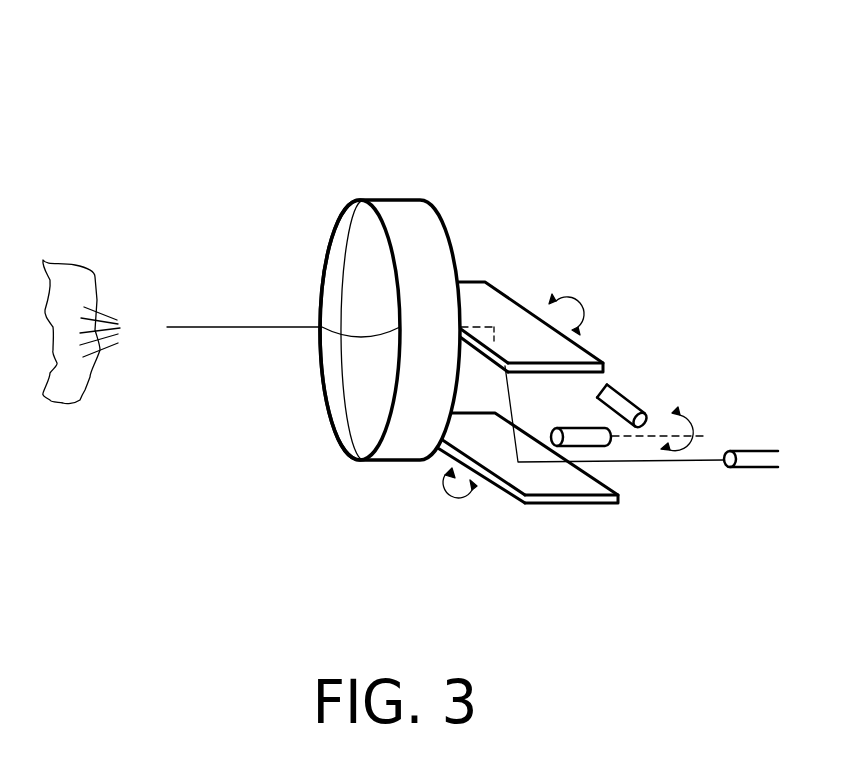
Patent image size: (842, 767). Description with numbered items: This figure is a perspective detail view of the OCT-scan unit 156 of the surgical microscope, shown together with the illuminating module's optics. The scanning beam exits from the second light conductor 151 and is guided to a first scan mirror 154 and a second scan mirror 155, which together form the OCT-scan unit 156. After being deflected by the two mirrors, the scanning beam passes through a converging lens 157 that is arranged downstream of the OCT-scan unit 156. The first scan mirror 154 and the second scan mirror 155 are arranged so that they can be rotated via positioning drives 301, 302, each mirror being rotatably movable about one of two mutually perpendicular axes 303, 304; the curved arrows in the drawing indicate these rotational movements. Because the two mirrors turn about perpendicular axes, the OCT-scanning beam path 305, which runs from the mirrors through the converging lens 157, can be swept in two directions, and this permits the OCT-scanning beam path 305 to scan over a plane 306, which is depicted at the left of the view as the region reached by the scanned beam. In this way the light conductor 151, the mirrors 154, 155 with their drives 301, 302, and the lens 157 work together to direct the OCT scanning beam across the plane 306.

The second light conductor 151 is at (767, 467).
The first scan mirror 154 is at (512, 480).
The second scan mirror 155 is at (490, 303).
The OCT-scan unit 156 is at (627, 290).
The converging lens 157 is at (403, 215).
The positioning drive 301 is at (598, 439).
The positioning drive 302 is at (630, 405).
The axis 303 is at (545, 437).
The axis 304 is at (603, 390).
The OCT-scanning beam path 305 is at (198, 327).
The plane 306 is at (78, 387).